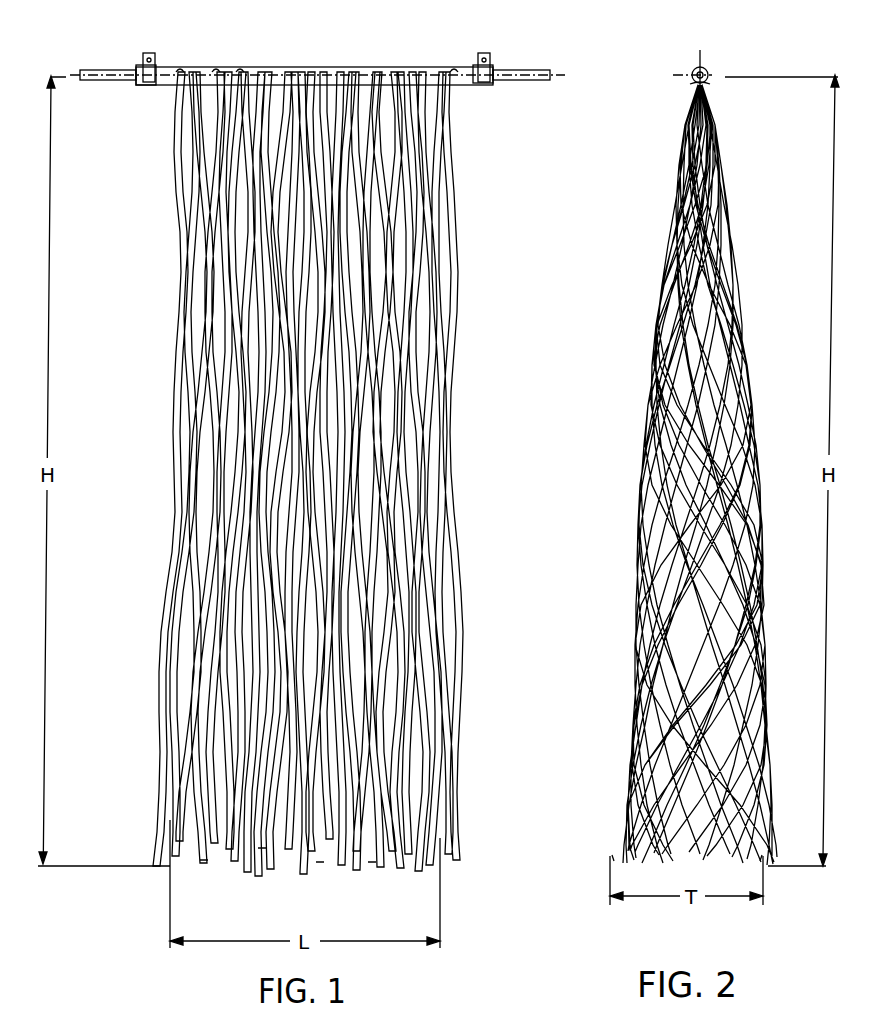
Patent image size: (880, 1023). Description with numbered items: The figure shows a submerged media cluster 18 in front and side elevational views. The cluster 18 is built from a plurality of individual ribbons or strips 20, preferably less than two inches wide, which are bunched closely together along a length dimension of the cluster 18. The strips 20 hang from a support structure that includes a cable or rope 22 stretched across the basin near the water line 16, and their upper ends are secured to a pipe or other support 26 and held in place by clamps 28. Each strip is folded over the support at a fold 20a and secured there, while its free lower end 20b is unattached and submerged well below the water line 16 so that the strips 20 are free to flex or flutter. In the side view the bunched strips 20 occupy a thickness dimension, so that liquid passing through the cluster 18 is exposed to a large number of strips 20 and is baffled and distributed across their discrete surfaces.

In FIG. 1, the water line 16 is at (60, 72).
In FIG. 2, the water line 16 is at (736, 72).
In FIG. 1, the cluster 18 is at (158, 290).
In FIG. 1, the strips 20 is at (178, 520).
In FIG. 2, the strips 20 is at (667, 378).
In FIG. 1, the fold 20a is at (208, 68).
In FIG. 2, the fold 20a is at (687, 88).
In FIG. 1, the free lower ends 20b is at (206, 861).
In FIG. 2, the free lower ends 20b is at (760, 795).
In FIG. 1, the cable or rope 22 is at (109, 69).
In FIG. 1, the pipe or other support 26 is at (166, 67).
In FIG. 2, the pipe or other support 26 is at (688, 70).
In FIG. 1, the clamps 28 is at (144, 52).